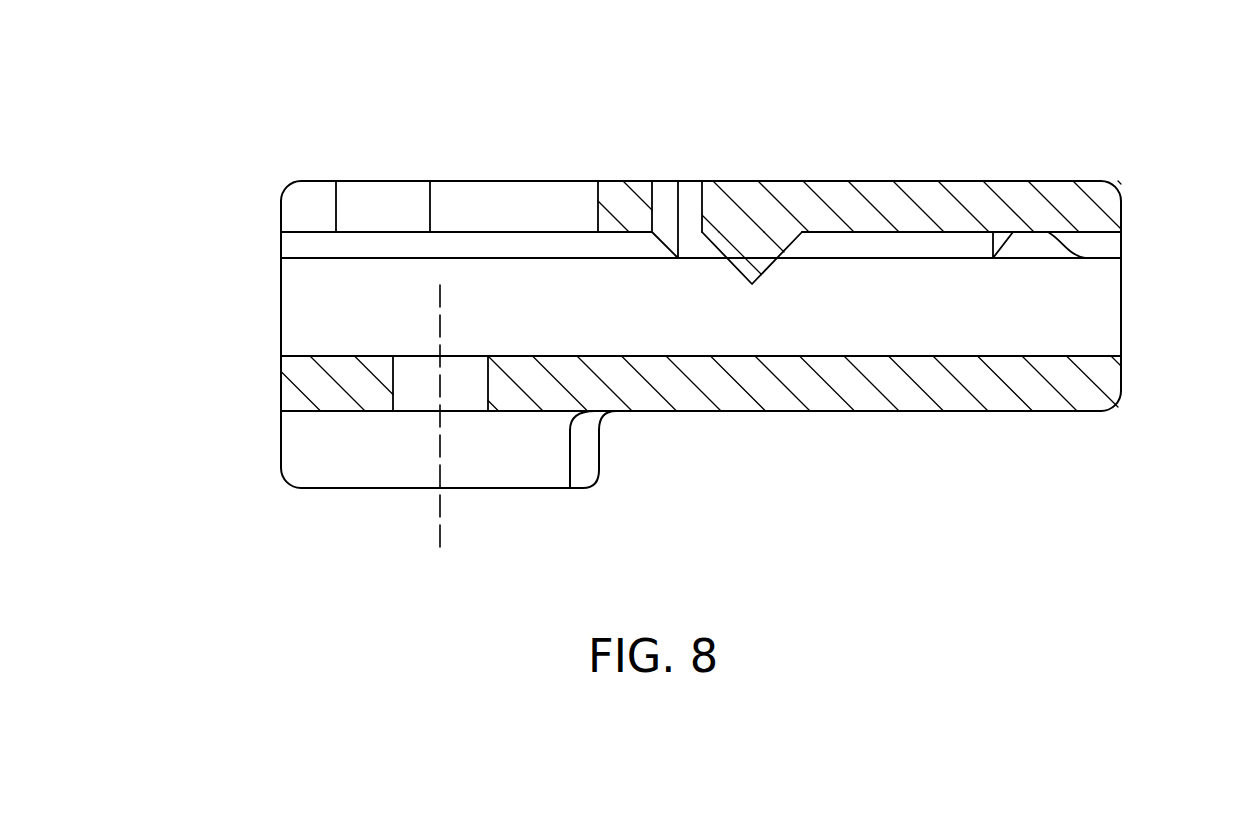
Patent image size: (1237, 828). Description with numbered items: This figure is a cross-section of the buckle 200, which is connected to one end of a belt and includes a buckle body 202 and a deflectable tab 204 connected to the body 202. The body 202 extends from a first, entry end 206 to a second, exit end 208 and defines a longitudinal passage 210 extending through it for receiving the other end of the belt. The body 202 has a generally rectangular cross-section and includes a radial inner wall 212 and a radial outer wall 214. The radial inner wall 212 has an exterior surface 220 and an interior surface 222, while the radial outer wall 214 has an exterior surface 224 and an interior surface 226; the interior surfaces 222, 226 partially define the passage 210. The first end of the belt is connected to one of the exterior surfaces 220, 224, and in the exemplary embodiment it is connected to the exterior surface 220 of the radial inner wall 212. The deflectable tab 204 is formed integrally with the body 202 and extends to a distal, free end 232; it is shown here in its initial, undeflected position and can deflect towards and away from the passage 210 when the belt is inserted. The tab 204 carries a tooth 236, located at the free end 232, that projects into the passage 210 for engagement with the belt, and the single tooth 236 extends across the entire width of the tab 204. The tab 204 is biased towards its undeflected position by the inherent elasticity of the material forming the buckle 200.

The buckle 200 is at (1052, 122).
The buckle body 202 is at (503, 181).
The deflectable tab 204 is at (927, 190).
The entry end 206 is at (1120, 357).
The exit end 208 is at (281, 385).
The longitudinal passage 210 is at (795, 318).
The radial inner wall 212 is at (958, 411).
The radial outer wall 214 is at (1075, 203).
The exterior surface of the radial inner wall 220 is at (1048, 411).
The interior surface of the radial inner wall 222 is at (1063, 356).
The exterior surface of the radial outer wall 224 is at (1008, 181).
The interior surface of the radial outer wall 226 is at (1088, 259).
The distal free end 232 is at (688, 198).
The tooth 236 is at (733, 258).